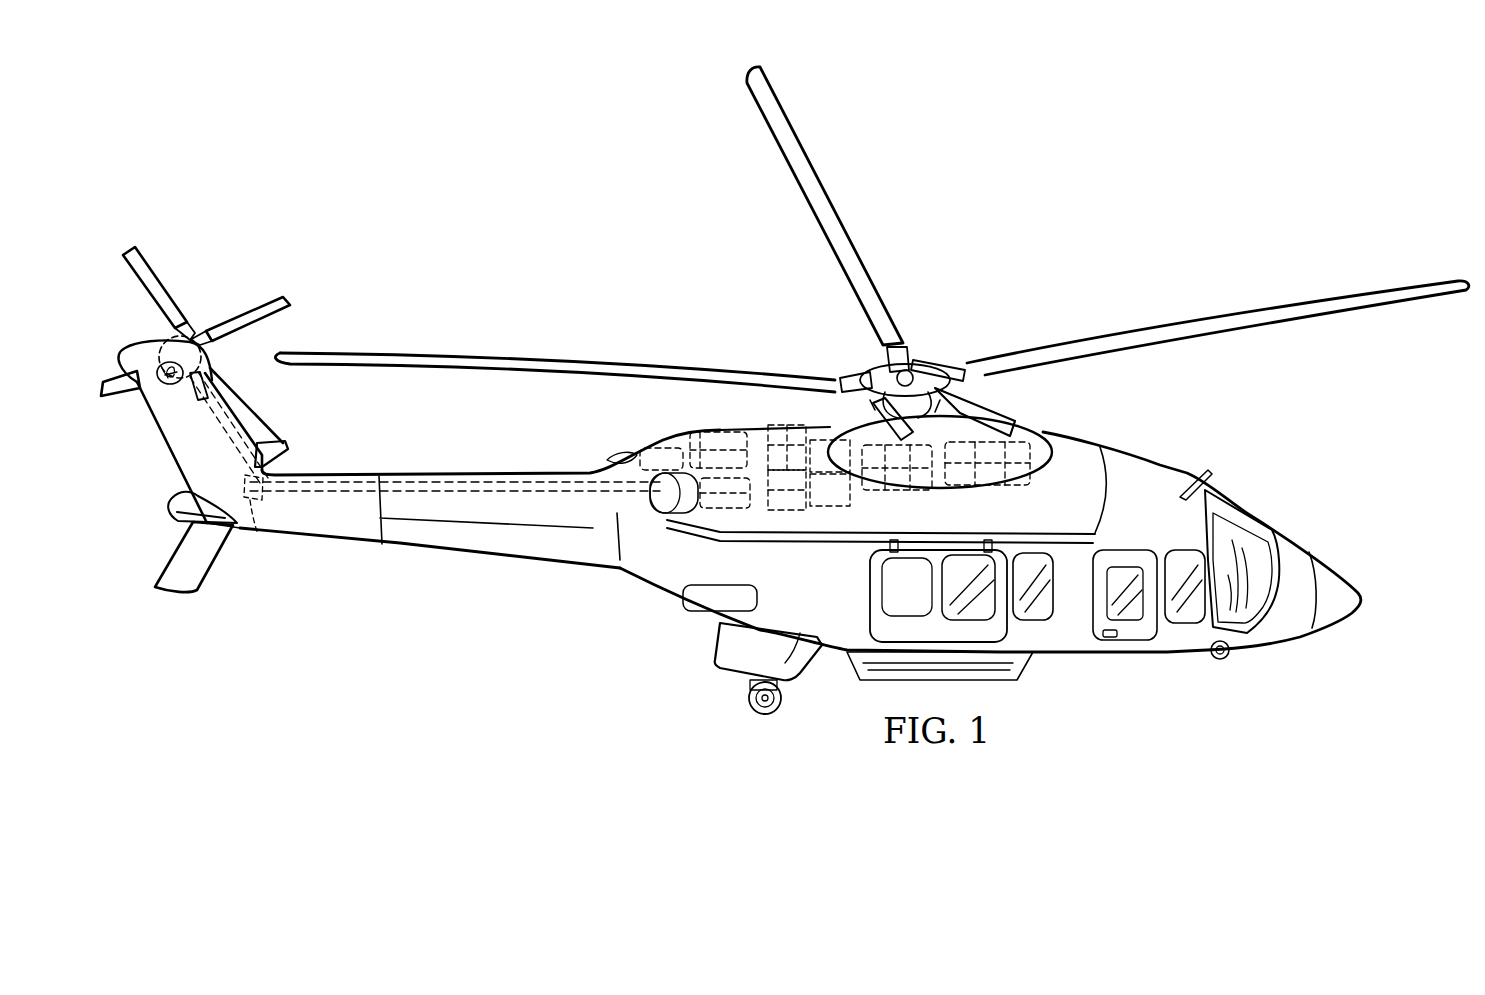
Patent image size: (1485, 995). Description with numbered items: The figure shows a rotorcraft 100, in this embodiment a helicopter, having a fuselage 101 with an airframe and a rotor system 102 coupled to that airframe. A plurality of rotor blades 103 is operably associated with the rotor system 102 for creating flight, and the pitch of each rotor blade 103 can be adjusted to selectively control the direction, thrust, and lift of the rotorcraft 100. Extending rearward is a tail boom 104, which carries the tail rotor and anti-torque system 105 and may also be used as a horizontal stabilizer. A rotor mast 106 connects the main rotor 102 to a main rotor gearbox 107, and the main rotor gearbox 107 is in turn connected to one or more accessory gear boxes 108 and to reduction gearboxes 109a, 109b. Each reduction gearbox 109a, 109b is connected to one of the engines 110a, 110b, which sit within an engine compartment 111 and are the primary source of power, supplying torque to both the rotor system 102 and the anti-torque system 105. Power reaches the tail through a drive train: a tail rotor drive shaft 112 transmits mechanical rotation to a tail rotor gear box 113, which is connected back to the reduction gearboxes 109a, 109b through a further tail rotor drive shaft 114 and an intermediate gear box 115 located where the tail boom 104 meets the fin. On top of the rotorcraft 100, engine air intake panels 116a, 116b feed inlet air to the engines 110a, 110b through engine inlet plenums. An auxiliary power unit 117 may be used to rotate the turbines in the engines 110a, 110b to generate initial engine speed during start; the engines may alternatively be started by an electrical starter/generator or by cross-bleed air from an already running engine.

The rotorcraft 100 is at (1151, 112).
The fuselage 101 is at (1078, 640).
The rotor system 102 is at (942, 337).
The rotor blades 103 is at (1200, 325).
The tail boom 104 is at (460, 548).
The tail rotor and anti-torque system 105 is at (212, 308).
The rotor mast 106 is at (890, 540).
The main rotor gearbox 107 is at (912, 490).
The accessory gear box 108 is at (1012, 485).
The reduction gearbox 109a is at (825, 510).
The reduction gearbox 109b is at (822, 438).
The engine 110a is at (750, 512).
The engine 110b is at (758, 428).
The engine compartment 111 is at (792, 422).
The tail rotor drive shaft 112 is at (466, 478).
The tail rotor gear box 113 is at (160, 345).
The tail rotor drive shaft 114 is at (228, 430).
The intermediate gear box 115 is at (258, 512).
The engine air intake panel 116a is at (805, 512).
The engine air intake panel 116b is at (787, 412).
The auxiliary power unit 117 is at (675, 440).